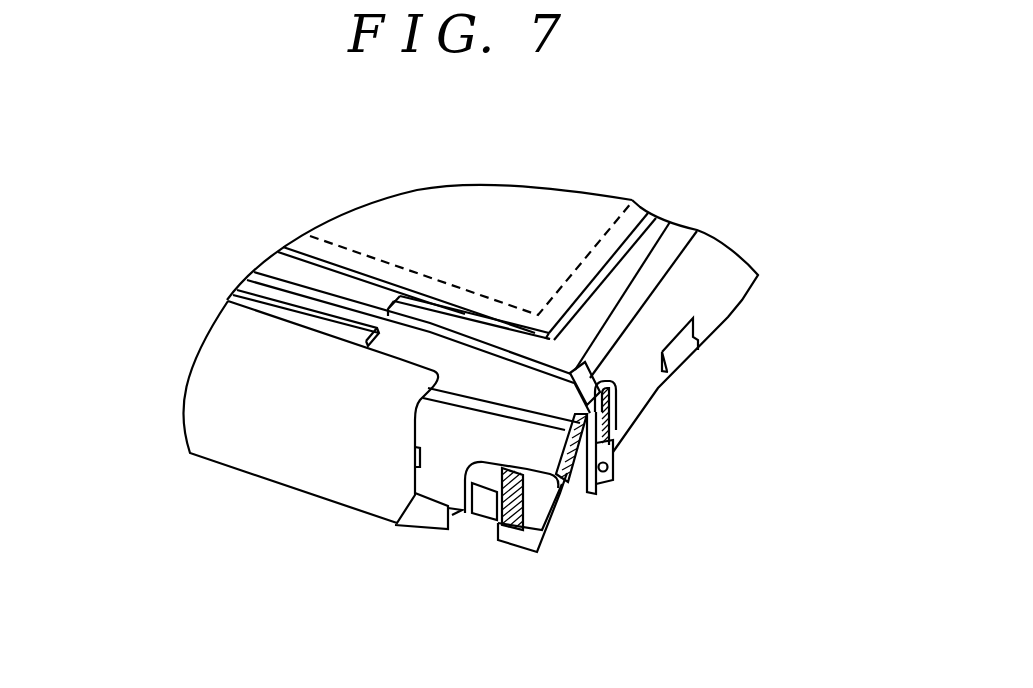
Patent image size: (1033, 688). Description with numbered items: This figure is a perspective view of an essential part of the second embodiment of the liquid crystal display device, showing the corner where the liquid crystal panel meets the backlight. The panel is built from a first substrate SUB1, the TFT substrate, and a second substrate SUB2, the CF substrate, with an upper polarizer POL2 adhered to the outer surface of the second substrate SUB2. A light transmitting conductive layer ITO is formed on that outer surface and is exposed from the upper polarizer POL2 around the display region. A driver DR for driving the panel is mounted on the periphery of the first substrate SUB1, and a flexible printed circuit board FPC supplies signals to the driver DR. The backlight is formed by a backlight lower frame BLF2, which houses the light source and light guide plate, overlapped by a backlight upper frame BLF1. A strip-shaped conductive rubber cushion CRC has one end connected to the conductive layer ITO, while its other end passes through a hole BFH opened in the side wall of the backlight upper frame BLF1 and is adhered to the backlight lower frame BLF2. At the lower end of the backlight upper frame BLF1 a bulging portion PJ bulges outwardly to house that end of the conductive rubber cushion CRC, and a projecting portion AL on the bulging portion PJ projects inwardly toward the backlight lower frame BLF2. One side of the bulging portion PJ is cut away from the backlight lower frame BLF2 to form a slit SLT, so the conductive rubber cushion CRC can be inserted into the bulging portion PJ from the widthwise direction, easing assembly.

The upper polarizer POL2 is at (397, 220).
The light transmitting conductive layer ITO is at (655, 248).
The second substrate (CF substrate) SUB2 is at (273, 263).
The conductive rubber cushion CRC is at (463, 327).
The driver DR is at (245, 293).
The flexible printed circuit board FPC is at (198, 399).
The first substrate (TFT substrate) SUB1 is at (405, 348).
The backlight upper frame BLF1 is at (732, 298).
The hole BFH is at (615, 403).
The backlight lower frame BLF2 is at (615, 428).
The projecting portion AL is at (608, 472).
The bulging portion PJ is at (600, 493).
The slit SLT is at (577, 500).